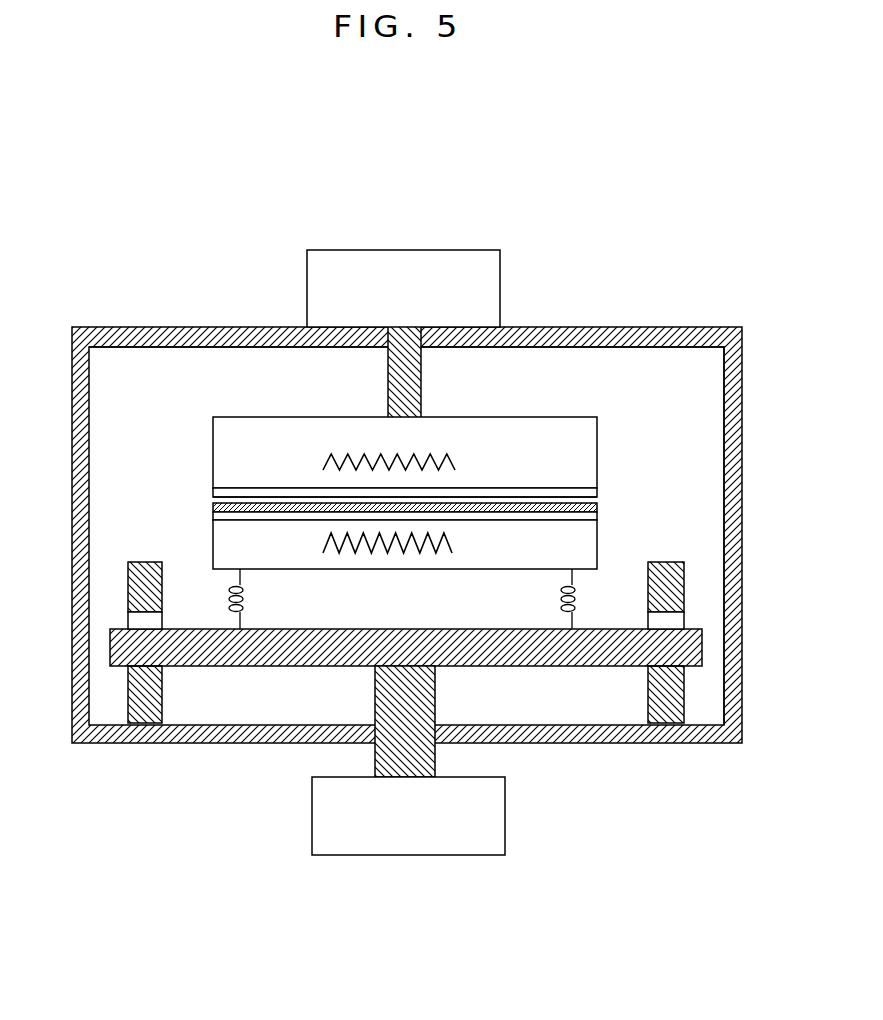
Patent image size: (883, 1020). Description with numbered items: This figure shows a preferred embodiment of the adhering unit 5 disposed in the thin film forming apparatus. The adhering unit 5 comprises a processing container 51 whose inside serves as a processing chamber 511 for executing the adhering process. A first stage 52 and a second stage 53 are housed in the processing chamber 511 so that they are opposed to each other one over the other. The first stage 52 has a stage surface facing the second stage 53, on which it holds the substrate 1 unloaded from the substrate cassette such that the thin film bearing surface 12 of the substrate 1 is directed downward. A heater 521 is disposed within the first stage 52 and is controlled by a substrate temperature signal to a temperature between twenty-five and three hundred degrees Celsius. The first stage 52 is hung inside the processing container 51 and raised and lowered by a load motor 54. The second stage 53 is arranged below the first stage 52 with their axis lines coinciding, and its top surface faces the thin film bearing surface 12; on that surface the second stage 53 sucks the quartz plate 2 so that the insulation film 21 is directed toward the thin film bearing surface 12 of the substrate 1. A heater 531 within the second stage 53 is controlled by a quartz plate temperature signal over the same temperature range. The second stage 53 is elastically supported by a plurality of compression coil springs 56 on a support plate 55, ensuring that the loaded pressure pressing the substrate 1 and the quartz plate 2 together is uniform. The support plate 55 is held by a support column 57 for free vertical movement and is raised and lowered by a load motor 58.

The adhering unit 5 is at (468, 547).
The processing container 51 is at (137, 327).
The processing chamber 511 is at (705, 367).
The first stage 52 is at (240, 463).
The heater 521 is at (437, 458).
The second stage 53 is at (222, 556).
The heater 531 is at (420, 554).
The load motor 54 is at (425, 250).
The support plate 55 is at (247, 655).
The compression coil springs 56 is at (248, 592).
The support column 57 is at (143, 705).
The load motor 58 is at (377, 856).
The substrate 1 is at (578, 492).
The thin film bearing surface 12 is at (590, 497).
The insulation film 21 is at (597, 508).
The quartz plate 2 is at (568, 515).